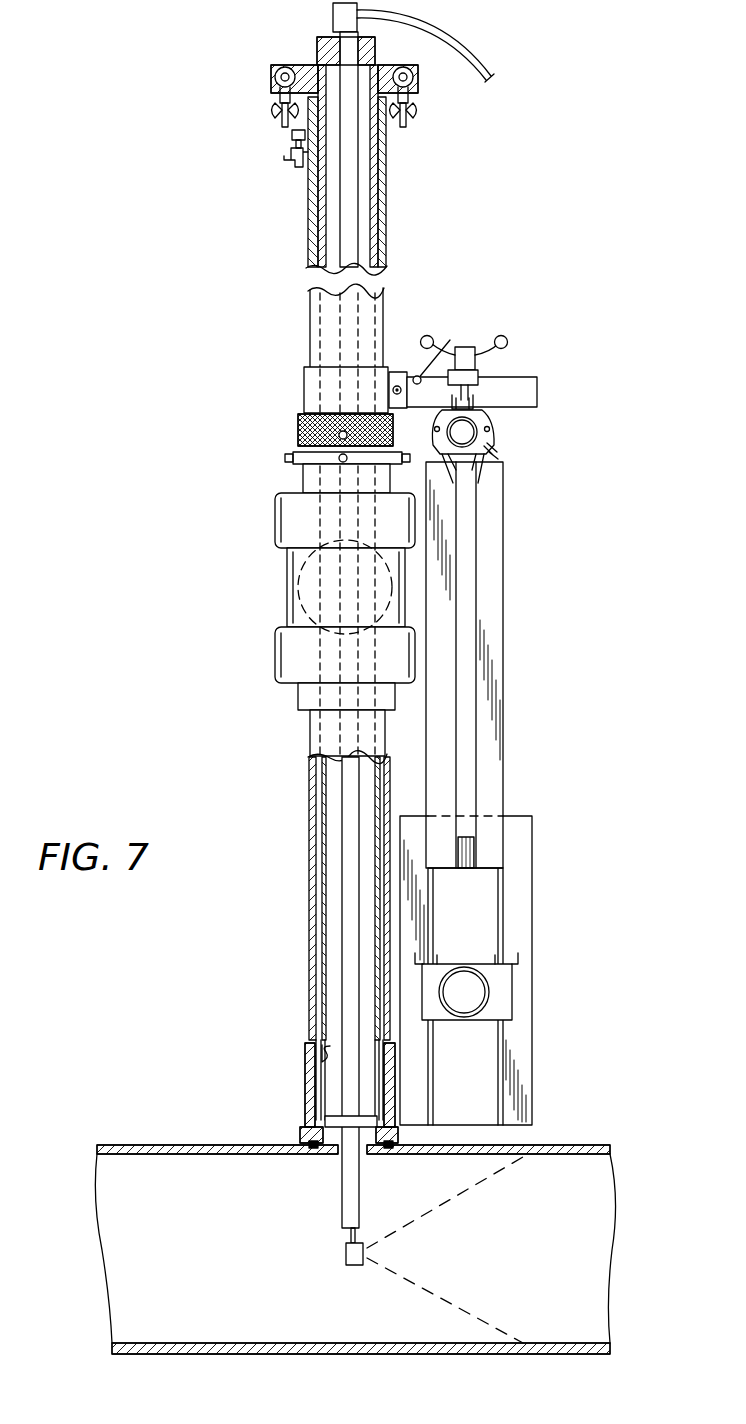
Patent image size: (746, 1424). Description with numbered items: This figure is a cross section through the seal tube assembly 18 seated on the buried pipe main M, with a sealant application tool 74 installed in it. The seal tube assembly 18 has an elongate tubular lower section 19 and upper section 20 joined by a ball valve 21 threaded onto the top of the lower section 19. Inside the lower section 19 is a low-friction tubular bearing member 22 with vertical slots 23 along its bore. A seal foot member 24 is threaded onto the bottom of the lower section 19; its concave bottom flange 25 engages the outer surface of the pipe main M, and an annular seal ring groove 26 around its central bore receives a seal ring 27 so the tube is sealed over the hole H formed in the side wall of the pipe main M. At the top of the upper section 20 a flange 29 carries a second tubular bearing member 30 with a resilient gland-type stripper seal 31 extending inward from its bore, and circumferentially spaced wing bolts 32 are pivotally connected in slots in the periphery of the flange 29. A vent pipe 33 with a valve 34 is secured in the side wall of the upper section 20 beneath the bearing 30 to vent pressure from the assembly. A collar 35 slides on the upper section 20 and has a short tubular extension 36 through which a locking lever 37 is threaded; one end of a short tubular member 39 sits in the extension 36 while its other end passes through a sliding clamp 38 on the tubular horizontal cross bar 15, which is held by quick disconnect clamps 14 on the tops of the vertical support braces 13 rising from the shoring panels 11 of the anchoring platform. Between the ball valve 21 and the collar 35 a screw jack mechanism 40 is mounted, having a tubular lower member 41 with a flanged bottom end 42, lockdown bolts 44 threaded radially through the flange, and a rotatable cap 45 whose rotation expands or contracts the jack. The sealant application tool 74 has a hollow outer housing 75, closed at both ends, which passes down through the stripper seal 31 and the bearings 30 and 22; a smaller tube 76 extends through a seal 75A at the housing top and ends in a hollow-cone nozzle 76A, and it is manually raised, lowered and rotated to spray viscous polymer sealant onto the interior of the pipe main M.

The flat rectangular panels 11 is at (525, 911).
The vertical support brace 13 is at (505, 662).
The quick disconnect clamp 14 is at (495, 471).
The horizontal cross bar 15 is at (492, 432).
The seal tube assembly 18 is at (327, 137).
The lower section 19 is at (310, 858).
The upper section 20 is at (308, 246).
The ball valve 21 is at (288, 597).
The tubular bearing member 22 is at (259, 1049).
The vertical slots 23 is at (323, 1052).
The seal foot member 24 is at (305, 1108).
The concave bottom flange 25 is at (300, 1136).
The annular seal ring groove 26 is at (319, 1176).
The seal ring 27 is at (313, 1152).
The flange 29 is at (271, 88).
The tubular bearing member 30 is at (267, 51).
The stripper seal 31 is at (317, 78).
The wing bolts 32 is at (278, 99).
The vent pipe 33 is at (292, 141).
The valve 34 is at (295, 168).
The collar 35 is at (304, 386).
The short tubular extension 36 is at (400, 372).
The locking lever 37 is at (424, 374).
The sliding clamp 38 is at (463, 400).
The short tubular member 39 is at (510, 388).
The screw jack mechanism 40 is at (299, 443).
The tubular lower member 41 is at (289, 488).
The flanged bottom end 42 is at (323, 466).
The lockdown bolts 44 is at (292, 459).
The rotatable cap 45 is at (298, 434).
The sealant application tool 74 is at (380, 195).
The outer housing 75 is at (318, 228).
The seal 75A is at (336, 46).
The tube 76 is at (360, 155).
The hollow-cone nozzle 76A is at (346, 1254).
The pipe main M is at (175, 1145).
The hole H is at (372, 1152).